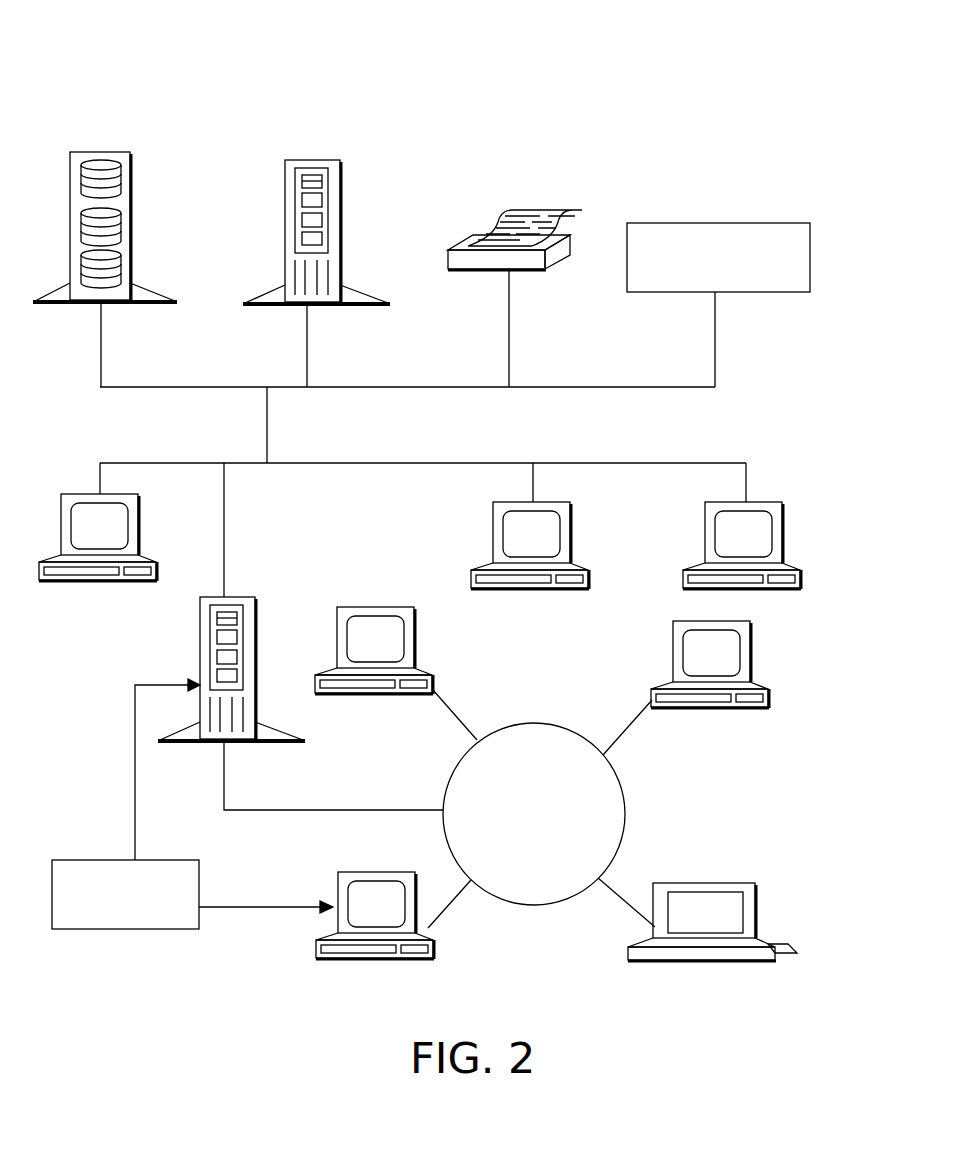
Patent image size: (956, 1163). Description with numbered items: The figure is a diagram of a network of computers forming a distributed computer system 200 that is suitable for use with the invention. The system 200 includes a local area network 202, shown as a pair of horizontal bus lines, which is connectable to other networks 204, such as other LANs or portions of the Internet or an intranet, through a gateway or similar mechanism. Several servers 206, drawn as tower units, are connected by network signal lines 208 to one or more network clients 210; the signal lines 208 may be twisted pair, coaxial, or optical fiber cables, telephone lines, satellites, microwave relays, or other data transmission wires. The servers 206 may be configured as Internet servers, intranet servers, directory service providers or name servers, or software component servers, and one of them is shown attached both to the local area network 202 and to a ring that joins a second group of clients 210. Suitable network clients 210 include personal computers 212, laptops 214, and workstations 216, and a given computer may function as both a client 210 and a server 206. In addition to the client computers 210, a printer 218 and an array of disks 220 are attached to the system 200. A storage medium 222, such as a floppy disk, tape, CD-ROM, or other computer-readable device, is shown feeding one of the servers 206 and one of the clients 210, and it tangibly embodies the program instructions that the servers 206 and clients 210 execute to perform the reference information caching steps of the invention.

The computer system 200 is at (168, 30).
The local area network 202 is at (454, 385).
The other networks 204 is at (734, 220).
The server 206 is at (305, 456).
The network signal line 208 is at (294, 530).
The network client 210 is at (573, 790).
The personal computer 212 is at (439, 673).
The laptop 214 is at (710, 896).
The workstation 216 is at (473, 519).
The printer 218 is at (558, 195).
The array of disks 220 is at (135, 199).
The storage medium 222 is at (192, 804).